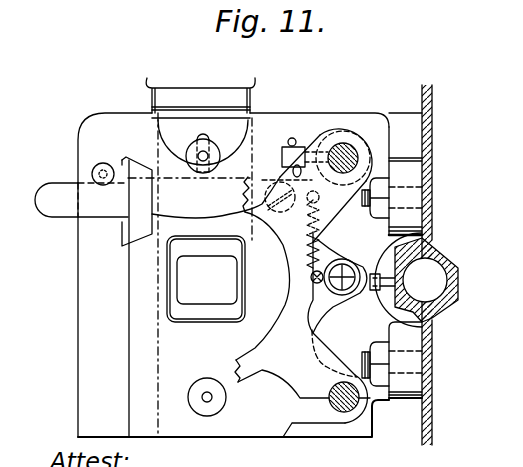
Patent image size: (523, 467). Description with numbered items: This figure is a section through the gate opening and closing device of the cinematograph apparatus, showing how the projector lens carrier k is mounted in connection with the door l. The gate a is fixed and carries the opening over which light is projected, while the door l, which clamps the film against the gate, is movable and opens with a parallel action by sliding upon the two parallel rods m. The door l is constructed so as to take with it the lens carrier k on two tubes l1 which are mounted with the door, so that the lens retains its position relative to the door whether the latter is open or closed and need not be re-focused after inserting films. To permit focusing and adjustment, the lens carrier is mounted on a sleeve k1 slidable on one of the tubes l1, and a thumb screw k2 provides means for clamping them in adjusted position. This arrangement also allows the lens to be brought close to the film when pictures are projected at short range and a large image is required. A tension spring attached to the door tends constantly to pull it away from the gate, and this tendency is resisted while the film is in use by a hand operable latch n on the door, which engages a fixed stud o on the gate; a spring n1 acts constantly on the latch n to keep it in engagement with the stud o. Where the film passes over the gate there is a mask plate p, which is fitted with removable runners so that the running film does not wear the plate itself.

The gate a is at (92, 377).
The door l is at (140, 312).
The hand operable latch n is at (72, 192).
The fixed stud o is at (100, 166).
The mask plate p is at (183, 251).
The lens carrier k is at (272, 360).
The sleeve k1 is at (328, 126).
The thumb screw k2 is at (287, 157).
The tubes l1 is at (325, 157).
The parallel rods m is at (354, 146).
The spring n1 is at (322, 244).